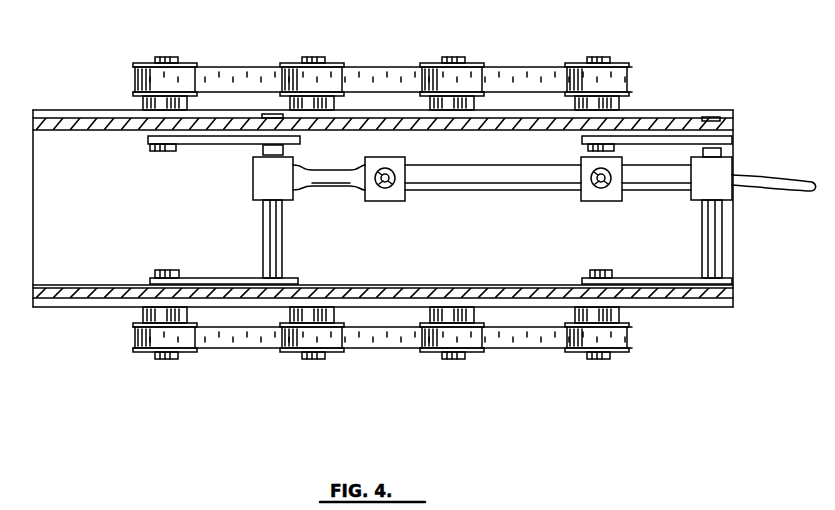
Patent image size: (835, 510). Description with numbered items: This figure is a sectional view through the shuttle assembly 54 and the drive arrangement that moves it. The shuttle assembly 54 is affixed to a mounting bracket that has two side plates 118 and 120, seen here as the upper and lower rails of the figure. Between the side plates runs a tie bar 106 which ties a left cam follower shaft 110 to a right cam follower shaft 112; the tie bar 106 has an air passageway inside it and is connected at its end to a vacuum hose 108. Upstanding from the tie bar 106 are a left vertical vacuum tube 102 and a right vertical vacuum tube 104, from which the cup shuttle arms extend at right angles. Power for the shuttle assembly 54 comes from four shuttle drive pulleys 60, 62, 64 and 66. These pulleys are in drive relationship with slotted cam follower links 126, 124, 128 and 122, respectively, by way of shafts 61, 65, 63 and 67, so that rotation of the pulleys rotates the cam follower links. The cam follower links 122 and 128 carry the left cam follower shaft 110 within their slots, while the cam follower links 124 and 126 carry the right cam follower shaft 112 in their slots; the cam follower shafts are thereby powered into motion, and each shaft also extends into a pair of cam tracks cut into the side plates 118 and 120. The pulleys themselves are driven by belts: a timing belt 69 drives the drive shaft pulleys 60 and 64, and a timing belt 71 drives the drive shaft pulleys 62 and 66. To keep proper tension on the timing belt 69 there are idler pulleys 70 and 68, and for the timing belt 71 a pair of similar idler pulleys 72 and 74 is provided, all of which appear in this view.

The shuttle assembly 54 is at (529, 56).
The shuttle drive pulley 60 is at (620, 352).
The shaft 61 is at (622, 247).
The shuttle drive pulley 62 is at (626, 63).
The shaft 63 is at (165, 270).
The shuttle drive pulley 64 is at (180, 352).
The shaft 65 is at (590, 147).
The shuttle drive pulley 66 is at (185, 62).
The shaft 67 is at (163, 152).
The idler pulley 68 is at (477, 352).
The timing belt 69 is at (400, 340).
The idler pulley 70 is at (332, 352).
The timing belt 71 is at (394, 80).
The idler pulley 72 is at (472, 62).
The idler pulley 74 is at (333, 63).
The left vertical vacuum tube 102 is at (381, 195).
The right vertical vacuum tube 104 is at (598, 192).
The tie bar 106 is at (487, 180).
The vacuum hose 108 is at (766, 178).
The left cam follower shaft 110 is at (282, 242).
The right cam follower shaft 112 is at (720, 245).
The side plate 118 is at (640, 124).
The side plate 120 is at (660, 292).
The slotted cam follower link 122 is at (223, 144).
The slotted cam follower link 124 is at (662, 142).
The slotted cam follower link 126 is at (668, 278).
The slotted cam follower link 128 is at (232, 278).